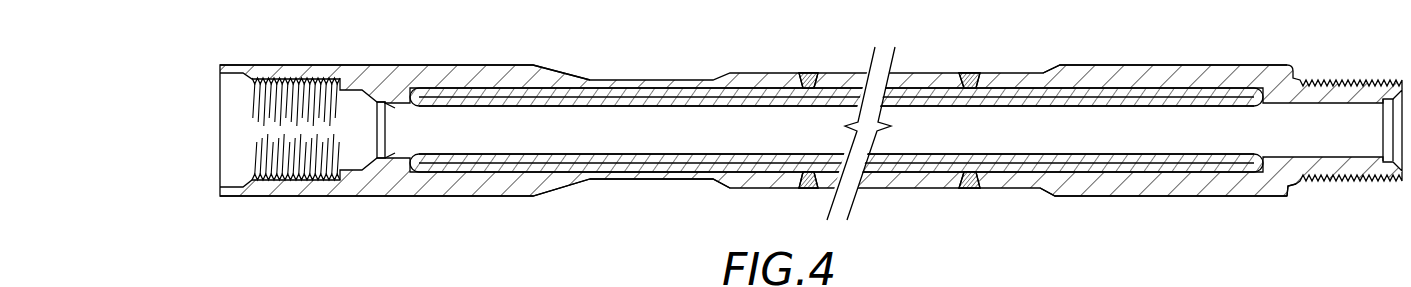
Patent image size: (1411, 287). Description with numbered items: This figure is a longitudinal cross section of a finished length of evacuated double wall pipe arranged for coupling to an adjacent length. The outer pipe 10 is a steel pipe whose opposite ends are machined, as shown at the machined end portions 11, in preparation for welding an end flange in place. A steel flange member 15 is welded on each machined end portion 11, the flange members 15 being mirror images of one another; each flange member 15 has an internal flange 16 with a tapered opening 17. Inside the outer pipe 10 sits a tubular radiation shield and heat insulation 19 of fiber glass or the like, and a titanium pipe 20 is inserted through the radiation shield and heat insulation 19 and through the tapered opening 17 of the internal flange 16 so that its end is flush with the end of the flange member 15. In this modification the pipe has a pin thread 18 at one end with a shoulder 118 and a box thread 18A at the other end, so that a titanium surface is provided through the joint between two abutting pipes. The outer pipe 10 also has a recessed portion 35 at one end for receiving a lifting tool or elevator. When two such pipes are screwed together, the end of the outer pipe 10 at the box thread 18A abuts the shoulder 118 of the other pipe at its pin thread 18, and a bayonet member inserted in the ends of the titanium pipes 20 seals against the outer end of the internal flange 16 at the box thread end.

The outer pipe 10 is at (932, 212).
The machined end portion 11 is at (808, 73).
The flange member 15 is at (361, 65).
The internal flange 16 is at (413, 96).
The tapered opening 17 is at (384, 108).
The pin thread 18 is at (1357, 80).
The box thread 18A is at (250, 106).
The radiation shield and heat insulation 19 is at (1107, 97).
The titanium pipe 20 is at (592, 106).
The recessed portion 35 is at (630, 181).
The shoulder 118 is at (1290, 188).